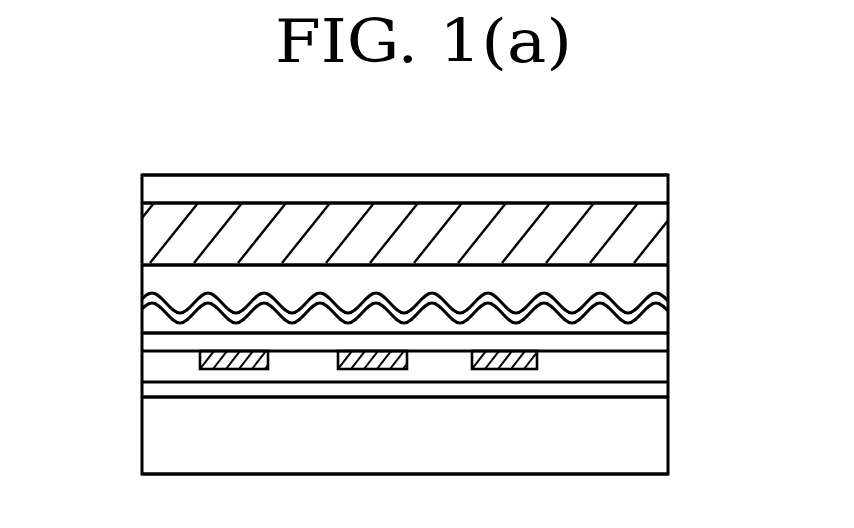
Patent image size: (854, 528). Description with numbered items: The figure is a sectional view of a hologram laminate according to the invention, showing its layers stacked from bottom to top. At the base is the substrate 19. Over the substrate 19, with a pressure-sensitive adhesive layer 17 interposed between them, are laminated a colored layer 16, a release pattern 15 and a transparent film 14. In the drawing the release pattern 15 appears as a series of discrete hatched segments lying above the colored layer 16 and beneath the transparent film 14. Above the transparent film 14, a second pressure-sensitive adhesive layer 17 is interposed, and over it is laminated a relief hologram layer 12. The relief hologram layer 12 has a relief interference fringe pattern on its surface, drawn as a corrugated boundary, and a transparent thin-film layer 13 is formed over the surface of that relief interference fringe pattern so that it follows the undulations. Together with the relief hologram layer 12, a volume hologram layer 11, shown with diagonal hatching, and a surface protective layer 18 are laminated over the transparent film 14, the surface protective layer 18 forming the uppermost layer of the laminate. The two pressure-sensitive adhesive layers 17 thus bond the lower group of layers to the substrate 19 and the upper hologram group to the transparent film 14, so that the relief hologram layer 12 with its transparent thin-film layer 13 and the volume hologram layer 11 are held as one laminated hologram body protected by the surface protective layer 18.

The surface protective layer 18 is at (662, 188).
The volume hologram layer 11 is at (672, 228).
The relief hologram layer 12 is at (660, 283).
The transparent thin-film layer 13 is at (667, 305).
The transparent film 14 is at (662, 342).
The release pattern 15 is at (537, 359).
The colored layer 16 is at (658, 378).
The pressure-sensitive adhesive layer 17 is at (150, 320).
The substrate 19 is at (658, 443).